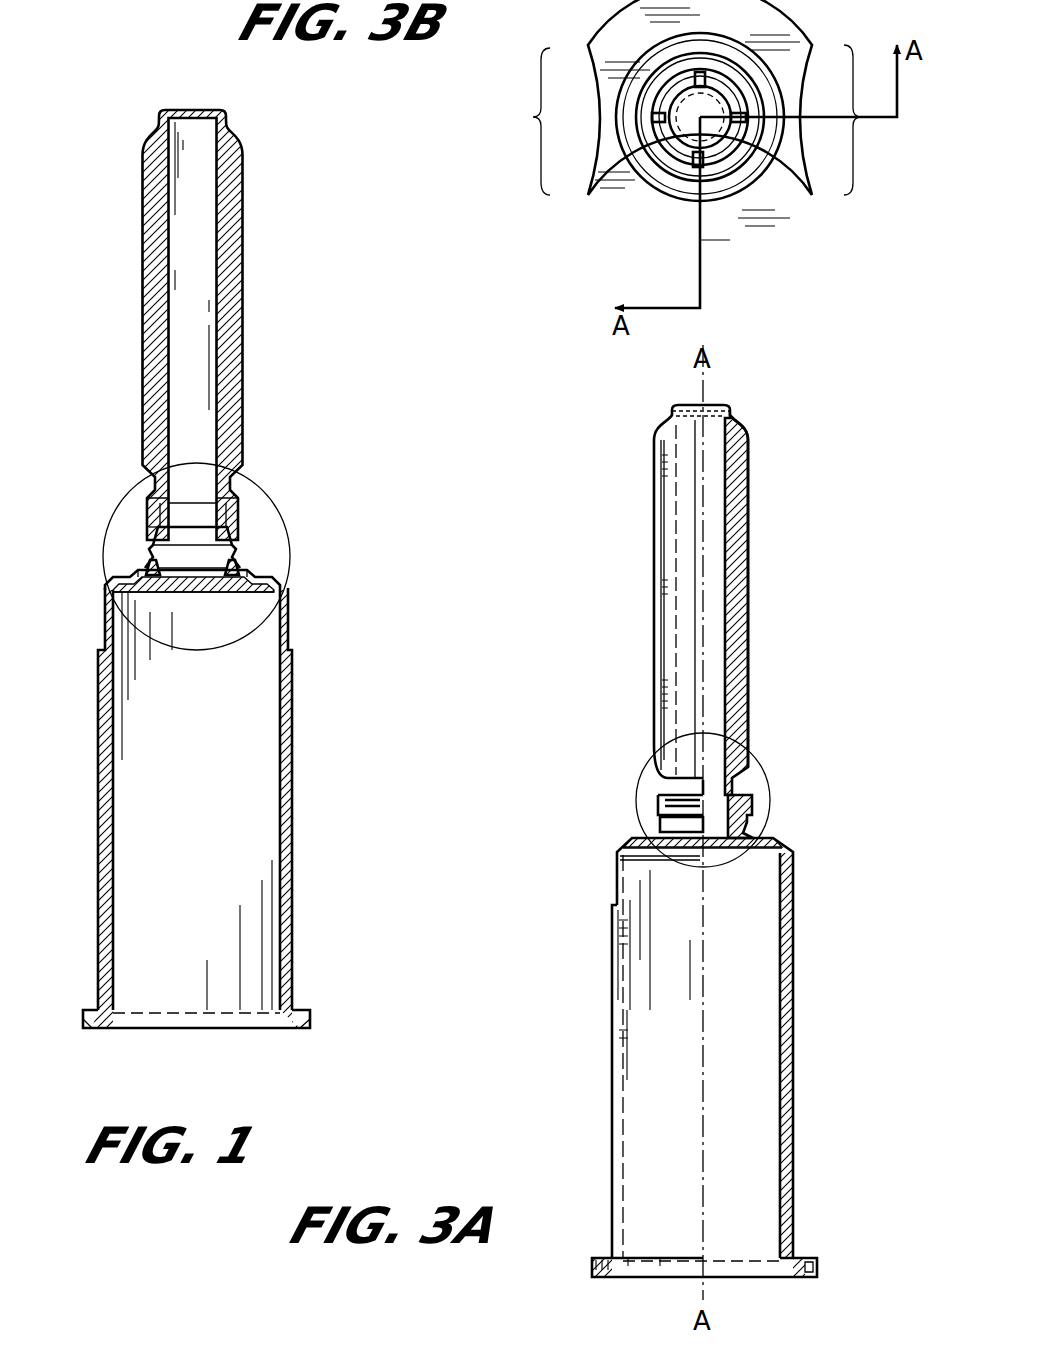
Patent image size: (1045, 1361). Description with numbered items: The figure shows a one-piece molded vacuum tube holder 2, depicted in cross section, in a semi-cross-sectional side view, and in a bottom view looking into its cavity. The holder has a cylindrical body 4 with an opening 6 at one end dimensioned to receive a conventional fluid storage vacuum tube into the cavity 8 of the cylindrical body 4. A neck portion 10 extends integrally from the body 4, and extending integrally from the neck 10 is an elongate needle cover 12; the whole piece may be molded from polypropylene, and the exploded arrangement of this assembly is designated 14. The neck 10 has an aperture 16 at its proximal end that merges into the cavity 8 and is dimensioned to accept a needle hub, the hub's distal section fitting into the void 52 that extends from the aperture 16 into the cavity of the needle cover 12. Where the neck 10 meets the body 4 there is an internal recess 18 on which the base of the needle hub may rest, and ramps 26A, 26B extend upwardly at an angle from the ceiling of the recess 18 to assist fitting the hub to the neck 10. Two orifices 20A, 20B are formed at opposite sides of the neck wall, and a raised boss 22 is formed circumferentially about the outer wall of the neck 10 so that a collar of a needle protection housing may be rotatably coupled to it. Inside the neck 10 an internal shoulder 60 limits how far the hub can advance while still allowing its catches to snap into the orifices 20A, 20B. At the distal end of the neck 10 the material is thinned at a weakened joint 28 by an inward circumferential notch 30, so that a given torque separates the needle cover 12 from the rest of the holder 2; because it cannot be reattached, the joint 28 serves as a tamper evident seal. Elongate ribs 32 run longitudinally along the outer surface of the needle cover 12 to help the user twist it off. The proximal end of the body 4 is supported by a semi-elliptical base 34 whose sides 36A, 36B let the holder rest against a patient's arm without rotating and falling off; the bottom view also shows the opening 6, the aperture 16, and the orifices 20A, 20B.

In FIG. 1, the vacuum tube holder 2 is at (405, 600).
In FIG. 1, the cylindrical body 4 is at (293, 780).
In FIG. 3A, the cylindrical body 4 is at (610, 1059).
In FIG. 1, the opening 6 is at (215, 1029).
In FIG. 3A, the opening 6 is at (745, 1278).
In FIG. 3B, the opening 6 is at (672, 228).
In FIG. 1, the cavity 8 is at (214, 852).
In FIG. 3A, the cavity 8 is at (751, 1067).
In FIG. 1, the neck portion 10 is at (150, 527).
In FIG. 3A, the neck portion 10 is at (762, 800).
In FIG. 3B, the neck portion 10 is at (687, 180).
In FIG. 1, the elongate needle cover 12 is at (143, 292).
In FIG. 3A, the elongate needle cover 12 is at (676, 716).
In FIG. 1, the exploded view 14 is at (273, 503).
In FIG. 3A, the exploded view 14 is at (762, 765).
In FIG. 1, the aperture 16 is at (212, 557).
In FIG. 3A, the aperture 16 is at (718, 826).
In FIG. 3B, the aperture 16 is at (720, 158).
In FIG. 1, the internal recess 18 is at (123, 605).
In FIG. 3A, the internal recess 18 is at (745, 850).
In FIG. 1, the orifice 20A is at (146, 550).
In FIG. 3B, the orifice 20A is at (658, 112).
In FIG. 1, the orifice 20B is at (243, 552).
In FIG. 3A, the orifice 20B is at (758, 824).
In FIG. 3B, the orifice 20B is at (744, 120).
In FIG. 1, the raised boss 22 is at (237, 549).
In FIG. 3A, the raised boss 22 is at (656, 822).
In FIG. 1, the ramp 26A is at (163, 582).
In FIG. 1, the ramp 26B is at (214, 578).
In FIG. 1, the weakened joint 28 is at (190, 503).
In FIG. 1, the inward circumferential notch 30 is at (147, 497).
In FIG. 3A, the inward circumferential notch 30 is at (672, 777).
In FIG. 3A, the elongate ribs 32 is at (696, 538).
In FIG. 3A, the base 34 is at (593, 1263).
In FIG. 3B, the base 34 is at (767, 238).
In FIG. 3B, the side 36A is at (510, 121).
In FIG. 3B, the side 36B is at (880, 120).
In FIG. 1, the void 52 is at (232, 498).
In FIG. 1, the internal shoulder 60 is at (165, 565).